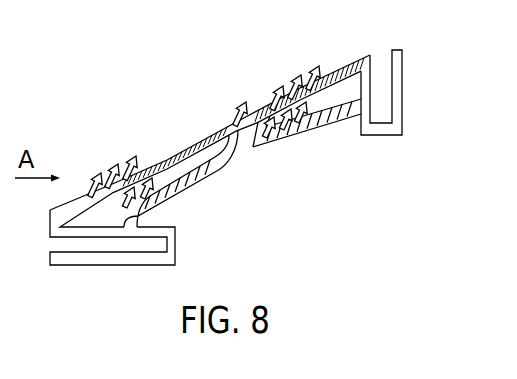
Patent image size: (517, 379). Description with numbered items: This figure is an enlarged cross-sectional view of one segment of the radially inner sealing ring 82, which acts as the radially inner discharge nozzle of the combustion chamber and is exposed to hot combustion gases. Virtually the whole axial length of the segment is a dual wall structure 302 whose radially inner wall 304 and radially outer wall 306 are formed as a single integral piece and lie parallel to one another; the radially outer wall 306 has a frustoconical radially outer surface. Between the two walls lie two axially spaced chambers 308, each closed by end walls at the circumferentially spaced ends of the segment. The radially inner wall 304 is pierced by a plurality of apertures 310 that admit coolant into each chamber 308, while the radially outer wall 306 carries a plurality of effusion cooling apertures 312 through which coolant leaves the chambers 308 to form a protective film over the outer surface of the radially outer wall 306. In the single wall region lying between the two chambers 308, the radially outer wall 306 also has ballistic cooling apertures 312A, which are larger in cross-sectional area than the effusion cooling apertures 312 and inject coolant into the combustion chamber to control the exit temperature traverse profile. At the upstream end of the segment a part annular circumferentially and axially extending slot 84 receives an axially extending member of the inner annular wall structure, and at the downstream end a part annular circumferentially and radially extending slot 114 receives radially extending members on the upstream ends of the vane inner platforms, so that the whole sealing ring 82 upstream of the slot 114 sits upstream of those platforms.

The radially inner sealing ring 82 is at (306, 164).
The part annular circumferentially and axially extending slot 84 is at (81, 251).
The part annular circumferentially and radially extending slot 114 is at (386, 80).
The dual wall structure 302 is at (270, 196).
The radially inner wall 304 is at (204, 185).
The radially outer wall 306 is at (172, 182).
The chamber 308 is at (160, 172).
The apertures 310 is at (336, 118).
The effusion cooling apertures 312 is at (130, 165).
The ballistic cooling apertures 312A is at (245, 101).